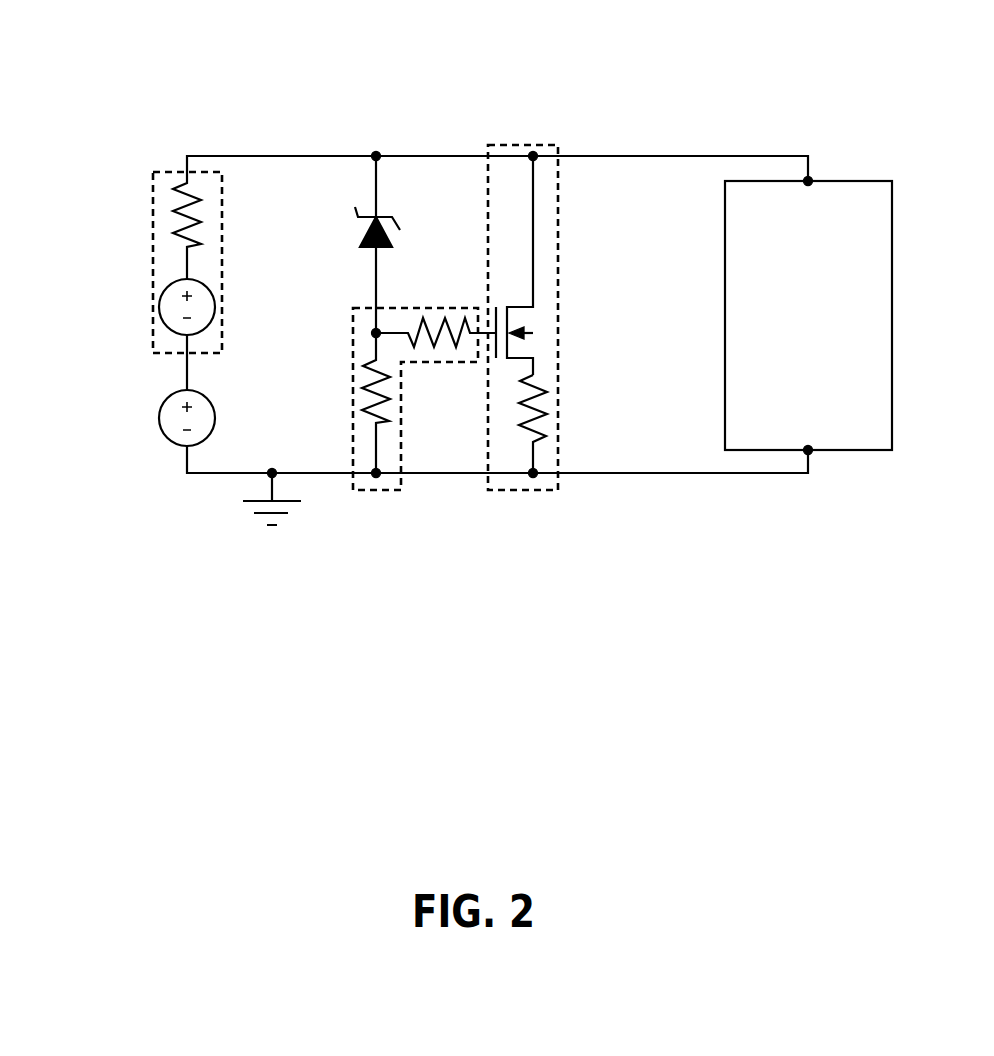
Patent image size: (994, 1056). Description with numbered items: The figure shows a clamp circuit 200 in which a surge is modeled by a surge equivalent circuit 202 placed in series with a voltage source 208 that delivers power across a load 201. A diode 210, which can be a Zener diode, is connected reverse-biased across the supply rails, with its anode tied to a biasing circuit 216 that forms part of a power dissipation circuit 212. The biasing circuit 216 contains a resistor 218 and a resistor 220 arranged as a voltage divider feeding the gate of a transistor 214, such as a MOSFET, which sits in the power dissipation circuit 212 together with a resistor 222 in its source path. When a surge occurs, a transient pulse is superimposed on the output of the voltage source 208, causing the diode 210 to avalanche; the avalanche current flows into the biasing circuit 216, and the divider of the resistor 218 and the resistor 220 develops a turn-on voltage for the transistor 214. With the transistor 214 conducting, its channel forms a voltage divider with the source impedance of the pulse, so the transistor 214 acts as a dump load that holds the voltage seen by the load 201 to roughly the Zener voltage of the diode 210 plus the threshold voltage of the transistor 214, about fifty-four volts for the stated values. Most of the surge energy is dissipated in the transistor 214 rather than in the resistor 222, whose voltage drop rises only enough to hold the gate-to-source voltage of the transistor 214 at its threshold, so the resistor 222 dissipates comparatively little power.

The clamp circuit 200 is at (441, 87).
The load 201 is at (782, 326).
The surge equivalent circuit 202 is at (152, 190).
The voltage source 208 is at (160, 418).
The diode 210 is at (396, 228).
The power dissipation circuit 212 is at (517, 491).
The transistor 214 is at (535, 355).
The biasing circuit 216 is at (387, 491).
The resistor 218 is at (366, 385).
The resistor 220 is at (447, 318).
The resistor 222 is at (549, 418).